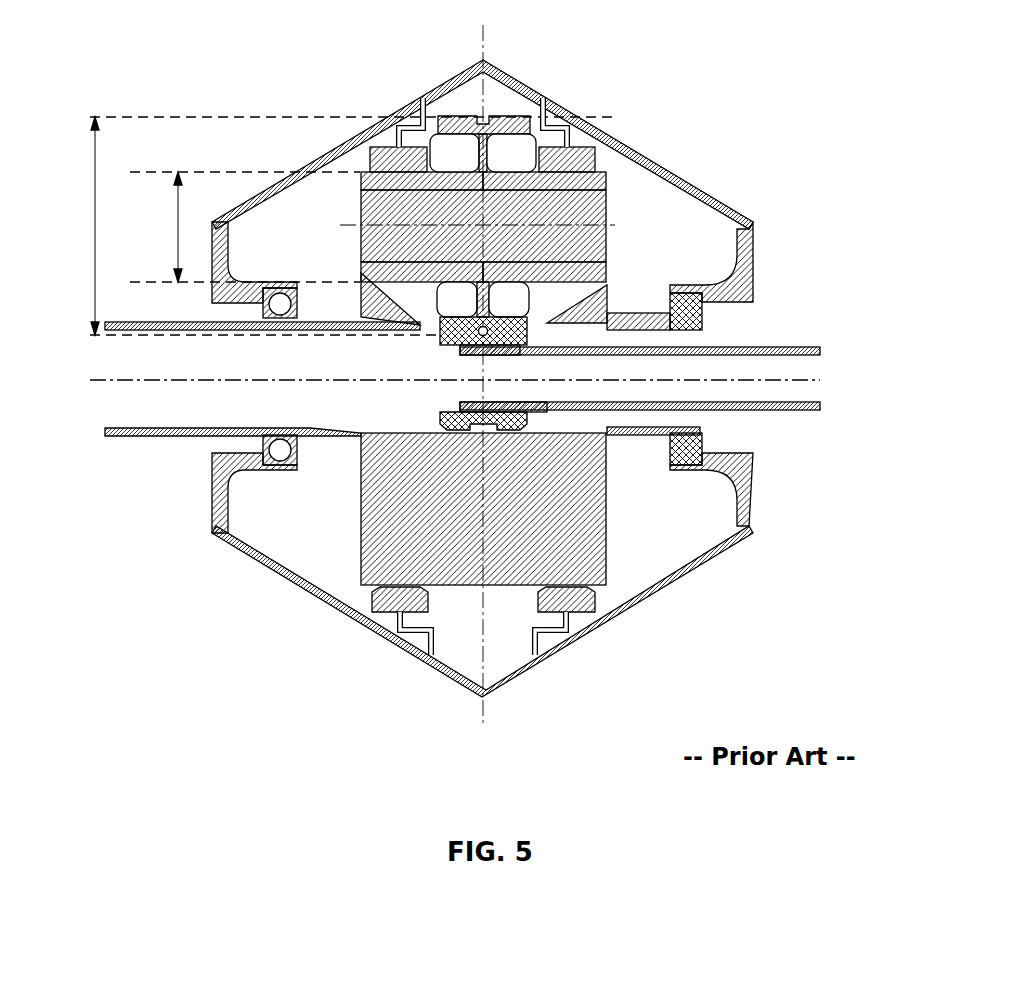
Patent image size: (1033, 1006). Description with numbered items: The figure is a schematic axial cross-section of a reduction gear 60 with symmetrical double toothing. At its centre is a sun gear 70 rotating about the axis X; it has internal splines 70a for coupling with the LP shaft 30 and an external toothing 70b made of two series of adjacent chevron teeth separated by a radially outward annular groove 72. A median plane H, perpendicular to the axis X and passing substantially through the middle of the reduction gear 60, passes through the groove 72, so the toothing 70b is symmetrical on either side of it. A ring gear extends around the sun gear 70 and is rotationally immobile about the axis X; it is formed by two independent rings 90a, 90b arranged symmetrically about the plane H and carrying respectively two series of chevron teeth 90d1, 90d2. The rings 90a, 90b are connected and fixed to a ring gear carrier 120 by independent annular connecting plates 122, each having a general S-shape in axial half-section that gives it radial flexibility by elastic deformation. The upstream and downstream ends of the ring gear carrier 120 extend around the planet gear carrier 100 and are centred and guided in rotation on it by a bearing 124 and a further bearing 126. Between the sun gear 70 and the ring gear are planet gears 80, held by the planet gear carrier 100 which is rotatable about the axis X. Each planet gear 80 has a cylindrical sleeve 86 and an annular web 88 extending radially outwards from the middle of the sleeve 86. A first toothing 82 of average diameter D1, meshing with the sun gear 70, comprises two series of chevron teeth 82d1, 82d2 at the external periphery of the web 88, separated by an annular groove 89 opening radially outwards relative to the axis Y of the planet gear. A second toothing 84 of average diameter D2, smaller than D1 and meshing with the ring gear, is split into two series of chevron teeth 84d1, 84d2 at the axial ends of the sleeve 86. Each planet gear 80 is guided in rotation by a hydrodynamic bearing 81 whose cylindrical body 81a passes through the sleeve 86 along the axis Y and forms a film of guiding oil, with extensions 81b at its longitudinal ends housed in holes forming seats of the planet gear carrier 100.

The LP shaft 30 is at (787, 347).
The reduction gear 60 is at (447, 236).
The sun gear 70 is at (439, 369).
The internal splines 70a is at (503, 402).
The external toothing 70b is at (528, 427).
The annular groove 72 is at (479, 337).
The planet gear 80 is at (495, 168).
The hydrodynamic bearing 81 is at (392, 150).
The cylindrical body 81a is at (448, 238).
The extensions 81b is at (245, 188).
The first toothing 82 is at (503, 312).
The first series of chevron teeth 82d1 is at (440, 118).
The second series of chevron teeth 82d2 is at (533, 104).
The second toothing 84 is at (479, 284).
The first series of chevron teeth 84d1 is at (390, 270).
The second series of chevron teeth 84d2 is at (582, 273).
The cylindrical sleeve 86 is at (360, 217).
The annular web 88 is at (480, 296).
The annular groove 89 is at (492, 105).
The first ring 90a is at (405, 148).
The second ring 90b is at (588, 160).
The first series of chevron teeth 90d1 is at (396, 180).
The second series of chevron teeth 90d2 is at (607, 185).
The planet gear carrier 100 is at (617, 532).
The ring gear carrier 120 is at (447, 250).
The annular connecting plates 122 is at (400, 138).
The bearing 124 is at (277, 318).
The further bearing 126 is at (695, 305).
The average diameter of first toothing D1 is at (94, 222).
The average diameter of second toothing D2 is at (177, 225).
The median plane H is at (489, 56).
The axis of rotation X is at (108, 382).
The planet gear axis Y is at (557, 230).